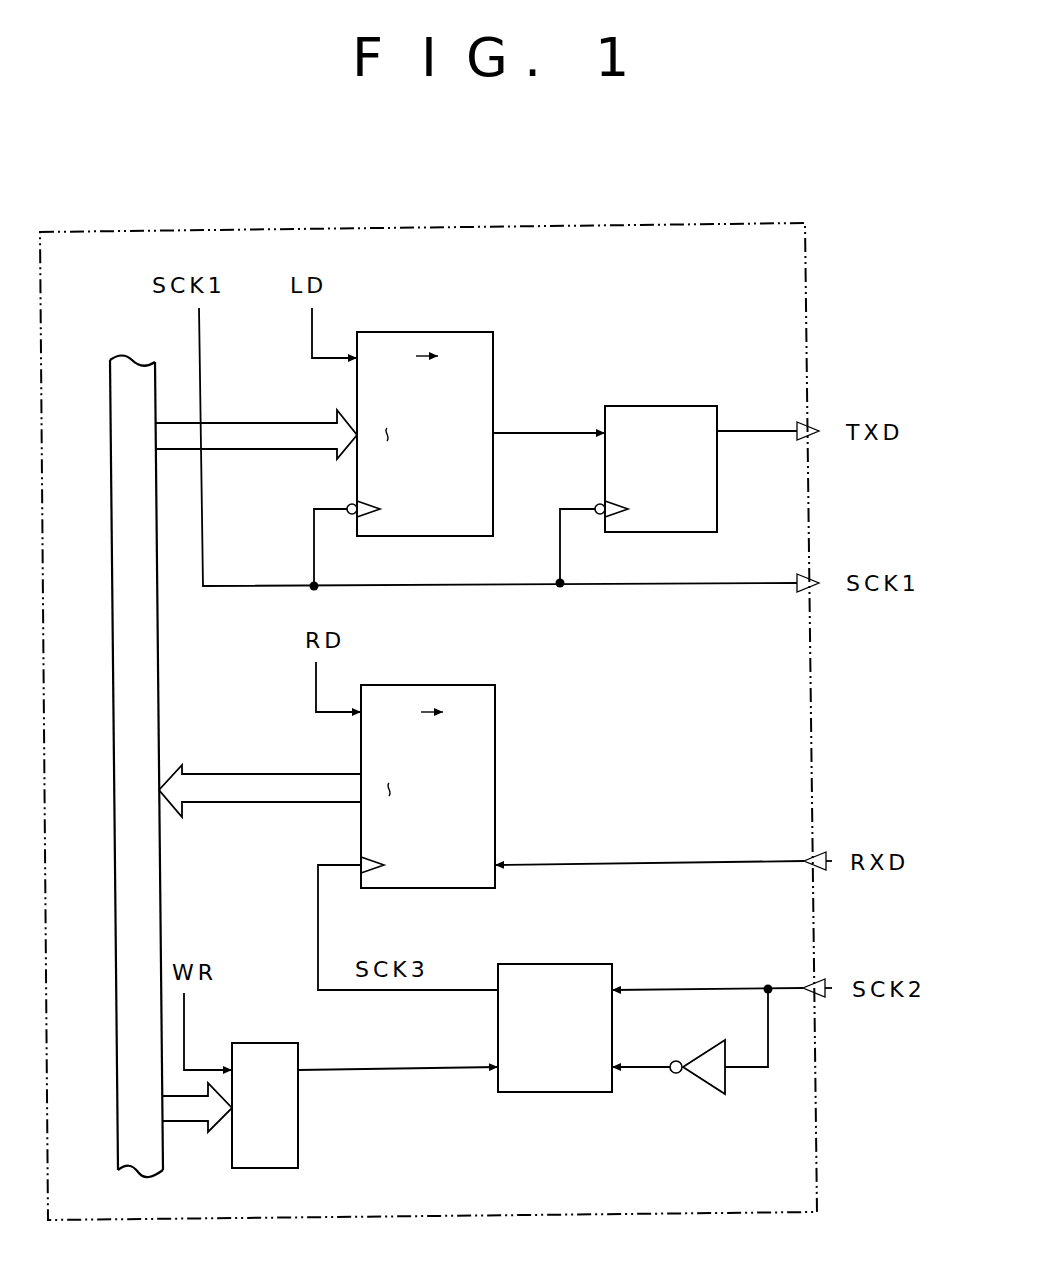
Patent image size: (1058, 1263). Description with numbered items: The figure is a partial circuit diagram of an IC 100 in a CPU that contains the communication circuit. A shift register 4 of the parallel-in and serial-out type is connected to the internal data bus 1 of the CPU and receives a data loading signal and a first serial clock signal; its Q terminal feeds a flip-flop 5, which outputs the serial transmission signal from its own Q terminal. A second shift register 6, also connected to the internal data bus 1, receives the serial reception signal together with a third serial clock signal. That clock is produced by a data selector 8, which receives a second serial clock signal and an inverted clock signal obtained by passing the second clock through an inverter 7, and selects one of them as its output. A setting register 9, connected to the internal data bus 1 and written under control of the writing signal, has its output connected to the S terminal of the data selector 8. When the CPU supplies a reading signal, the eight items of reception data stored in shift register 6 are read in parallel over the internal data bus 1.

The IC 100 is at (578, 227).
The internal data bus 1 is at (128, 865).
The shift register 4 is at (455, 331).
The flip-flop 5 is at (680, 406).
The shift register 6 is at (455, 684).
The inverter 7 is at (725, 1047).
The data selector 8 is at (572, 963).
The setting register 9 is at (298, 1143).